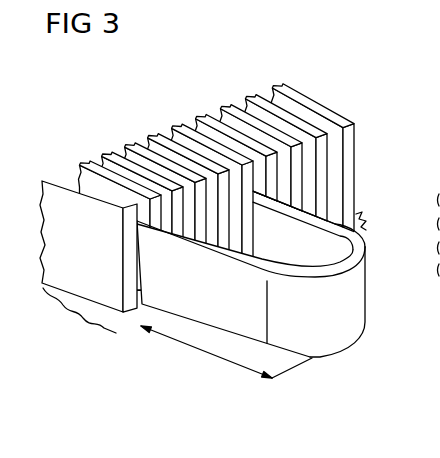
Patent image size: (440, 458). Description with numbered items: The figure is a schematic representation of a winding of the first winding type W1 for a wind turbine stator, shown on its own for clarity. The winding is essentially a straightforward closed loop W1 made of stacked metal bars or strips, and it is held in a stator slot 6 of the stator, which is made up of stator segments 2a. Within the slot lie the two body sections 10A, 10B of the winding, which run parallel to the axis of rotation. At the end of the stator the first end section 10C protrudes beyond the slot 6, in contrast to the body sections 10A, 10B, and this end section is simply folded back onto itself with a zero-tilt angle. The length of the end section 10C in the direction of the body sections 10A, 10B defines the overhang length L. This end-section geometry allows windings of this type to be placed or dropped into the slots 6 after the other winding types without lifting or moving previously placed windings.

The stator slot 6 is at (105, 185).
The stator segment 2a is at (133, 318).
The body section 10A is at (216, 293).
The body section 10B is at (293, 248).
The first end section 10C is at (354, 331).
The first winding type W1 is at (319, 240).
The overhang length L is at (200, 349).